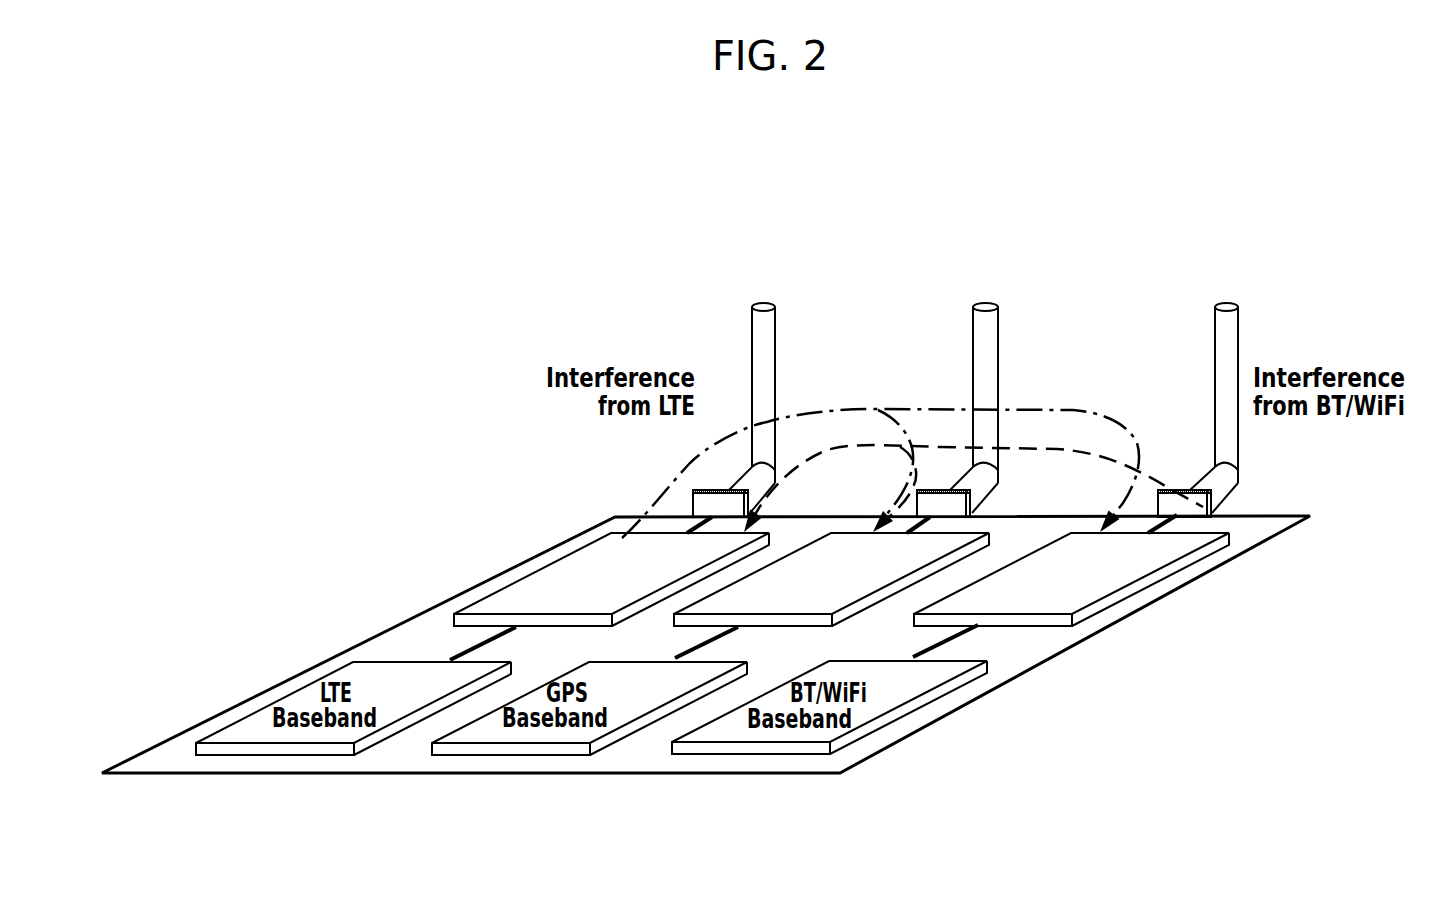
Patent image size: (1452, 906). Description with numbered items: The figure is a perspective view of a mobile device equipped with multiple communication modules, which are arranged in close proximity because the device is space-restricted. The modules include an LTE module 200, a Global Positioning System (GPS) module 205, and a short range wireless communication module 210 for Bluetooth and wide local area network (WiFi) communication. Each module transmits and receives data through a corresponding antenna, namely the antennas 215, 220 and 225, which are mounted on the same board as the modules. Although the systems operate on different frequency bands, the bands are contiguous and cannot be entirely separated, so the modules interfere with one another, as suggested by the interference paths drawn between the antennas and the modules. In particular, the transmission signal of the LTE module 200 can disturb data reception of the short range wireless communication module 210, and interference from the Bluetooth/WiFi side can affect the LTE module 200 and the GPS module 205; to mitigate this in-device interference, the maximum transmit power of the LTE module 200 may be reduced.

The LTE module 200 is at (582, 553).
The Global Positioning System (GPS) module 205 is at (887, 567).
The short range wireless communication module 210 is at (1163, 552).
The antenna 215 is at (753, 303).
The antenna 220 is at (975, 303).
The antenna 225 is at (1220, 303).